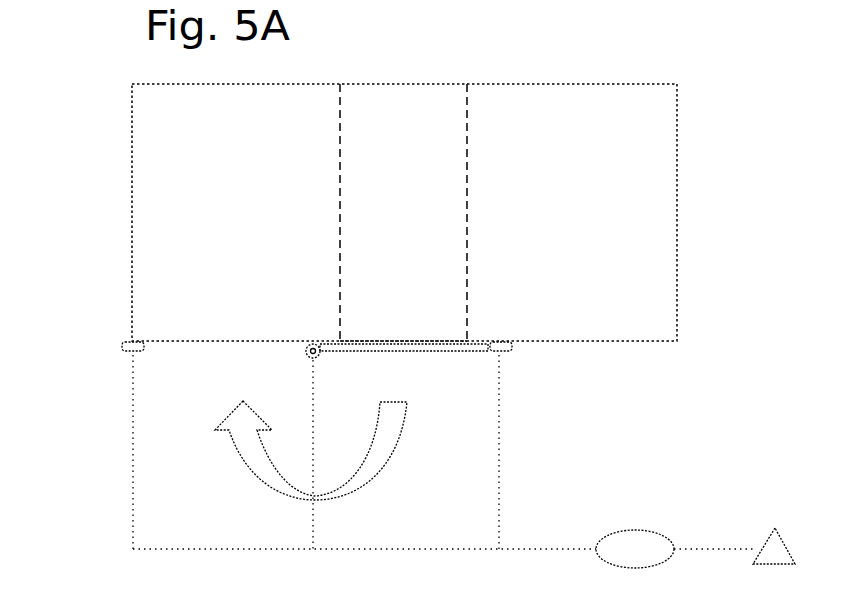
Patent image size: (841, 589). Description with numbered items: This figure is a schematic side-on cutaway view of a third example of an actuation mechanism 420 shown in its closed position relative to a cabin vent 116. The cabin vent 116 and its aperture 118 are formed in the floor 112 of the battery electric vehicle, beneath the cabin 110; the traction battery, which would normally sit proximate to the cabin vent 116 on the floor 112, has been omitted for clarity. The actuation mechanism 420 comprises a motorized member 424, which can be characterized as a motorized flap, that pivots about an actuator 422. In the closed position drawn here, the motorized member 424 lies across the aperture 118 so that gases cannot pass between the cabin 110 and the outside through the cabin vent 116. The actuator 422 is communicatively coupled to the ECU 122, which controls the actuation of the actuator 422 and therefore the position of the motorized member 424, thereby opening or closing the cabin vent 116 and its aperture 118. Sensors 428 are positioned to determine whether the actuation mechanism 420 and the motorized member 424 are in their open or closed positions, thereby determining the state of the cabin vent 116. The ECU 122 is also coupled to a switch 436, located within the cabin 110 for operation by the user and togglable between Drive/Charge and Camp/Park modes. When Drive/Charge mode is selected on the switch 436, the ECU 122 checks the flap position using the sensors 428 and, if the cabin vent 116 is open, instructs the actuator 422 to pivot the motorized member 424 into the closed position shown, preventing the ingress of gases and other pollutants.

The cabin 110 is at (423, 70).
The floor 112 is at (260, 196).
The cabin vent 116 is at (422, 162).
The aperture 118 is at (398, 341).
The ECU 122 is at (636, 530).
The actuation mechanism 420 is at (104, 352).
The actuator 422 is at (304, 354).
The motorized member 424 is at (446, 352).
The sensors 428 is at (512, 351).
The switch 436 is at (774, 530).